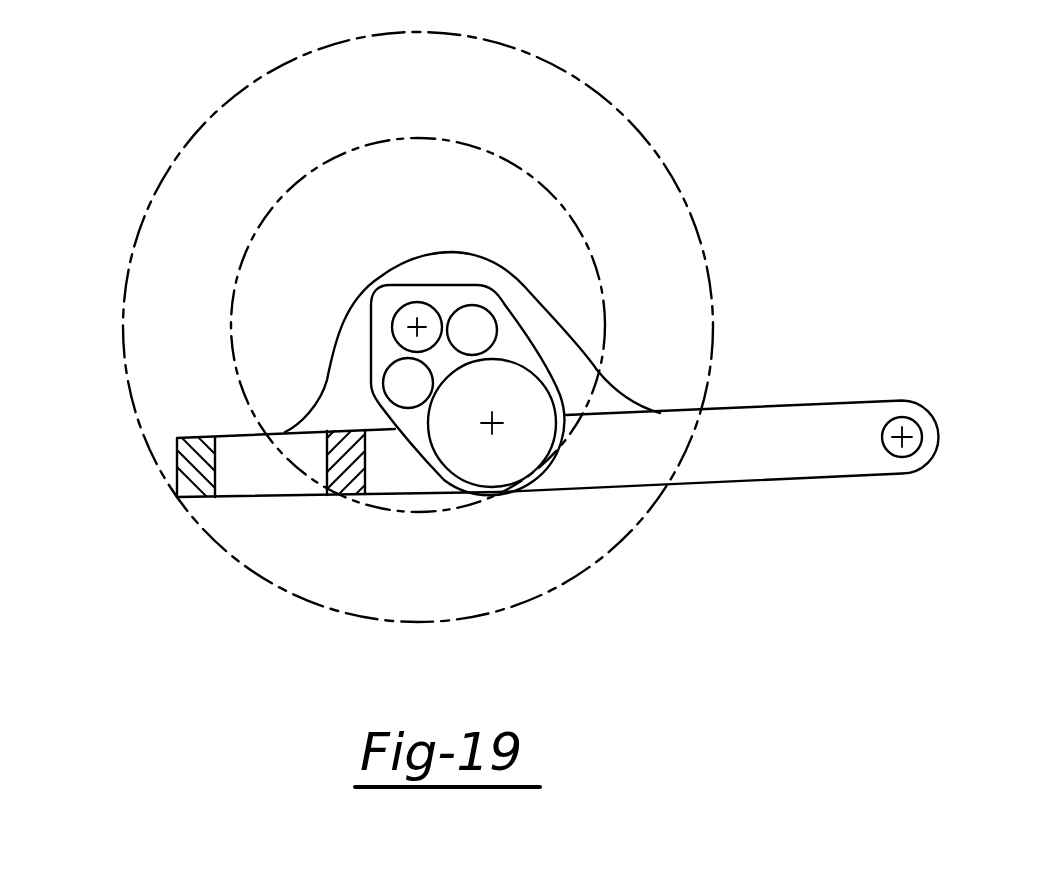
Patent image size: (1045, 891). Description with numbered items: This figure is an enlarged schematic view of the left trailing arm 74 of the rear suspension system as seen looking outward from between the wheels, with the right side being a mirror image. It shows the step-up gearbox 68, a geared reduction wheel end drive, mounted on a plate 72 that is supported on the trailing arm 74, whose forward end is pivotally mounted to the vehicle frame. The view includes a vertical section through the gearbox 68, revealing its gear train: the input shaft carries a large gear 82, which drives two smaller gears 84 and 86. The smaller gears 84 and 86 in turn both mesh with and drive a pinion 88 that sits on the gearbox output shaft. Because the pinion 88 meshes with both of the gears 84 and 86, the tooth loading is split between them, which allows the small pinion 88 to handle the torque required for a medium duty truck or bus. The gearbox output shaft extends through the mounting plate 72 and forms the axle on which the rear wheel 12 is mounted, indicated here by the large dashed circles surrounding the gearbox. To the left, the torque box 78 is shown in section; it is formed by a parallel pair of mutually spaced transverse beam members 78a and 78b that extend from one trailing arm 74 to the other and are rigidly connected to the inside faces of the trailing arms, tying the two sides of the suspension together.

The rear wheel 12 is at (700, 241).
The step-up gearbox 68 is at (453, 286).
The plate 72 is at (358, 325).
The trailing arm 74 is at (747, 473).
The torque box 78 is at (258, 496).
The transverse beam member 78a is at (192, 460).
The transverse beam member 78b is at (355, 483).
The large gear 82 is at (530, 447).
The smaller gear 84 is at (482, 327).
The smaller gear 86 is at (405, 388).
The pinion 88 is at (419, 317).